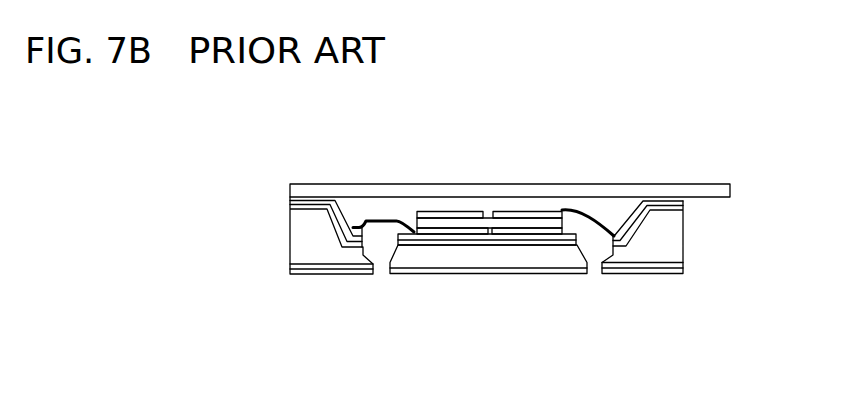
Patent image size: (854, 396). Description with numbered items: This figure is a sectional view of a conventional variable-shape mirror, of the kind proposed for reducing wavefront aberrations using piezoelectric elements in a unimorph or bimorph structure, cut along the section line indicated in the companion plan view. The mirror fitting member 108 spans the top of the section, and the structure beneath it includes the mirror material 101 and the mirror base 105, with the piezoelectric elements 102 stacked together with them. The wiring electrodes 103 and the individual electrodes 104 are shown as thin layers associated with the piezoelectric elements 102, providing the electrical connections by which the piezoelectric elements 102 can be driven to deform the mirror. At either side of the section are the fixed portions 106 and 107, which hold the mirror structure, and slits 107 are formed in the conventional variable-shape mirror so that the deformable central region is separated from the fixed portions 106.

The mirror material 101 is at (536, 274).
The piezoelectric elements 102 is at (547, 222).
The wiring electrodes 103 is at (520, 234).
The individual electrodes 104 is at (528, 213).
The mirror base 105 is at (519, 256).
The fixed portions 106 is at (302, 238).
The slits 107 is at (593, 272).
The mirror fitting member 108 is at (640, 189).